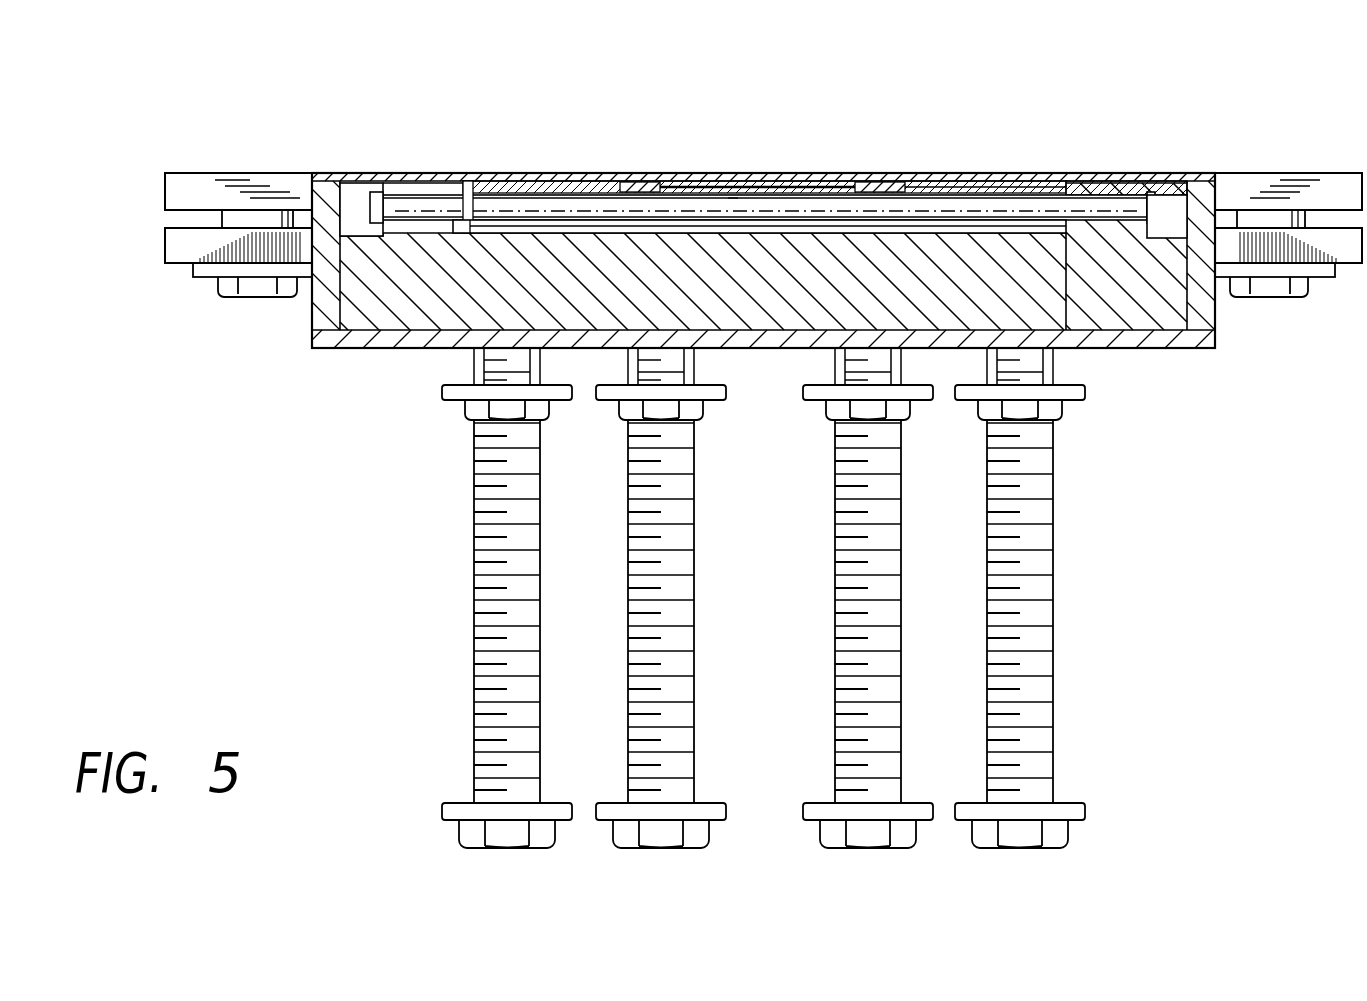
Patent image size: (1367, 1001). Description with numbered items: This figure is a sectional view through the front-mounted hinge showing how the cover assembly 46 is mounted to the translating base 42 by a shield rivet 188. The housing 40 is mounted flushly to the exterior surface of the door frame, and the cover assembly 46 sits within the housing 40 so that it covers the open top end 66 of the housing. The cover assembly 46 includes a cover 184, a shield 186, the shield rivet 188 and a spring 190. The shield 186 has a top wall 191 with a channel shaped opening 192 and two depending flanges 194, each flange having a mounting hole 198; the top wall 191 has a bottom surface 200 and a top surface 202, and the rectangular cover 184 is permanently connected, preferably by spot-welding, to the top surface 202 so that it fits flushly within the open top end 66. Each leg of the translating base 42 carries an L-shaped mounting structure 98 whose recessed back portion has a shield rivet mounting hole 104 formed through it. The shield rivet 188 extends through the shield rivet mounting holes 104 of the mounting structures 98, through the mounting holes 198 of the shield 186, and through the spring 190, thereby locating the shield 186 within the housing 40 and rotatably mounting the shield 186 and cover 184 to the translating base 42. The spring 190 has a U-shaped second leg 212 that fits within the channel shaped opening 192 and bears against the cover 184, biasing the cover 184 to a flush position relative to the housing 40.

The housing 40 is at (323, 183).
The translating base 42 is at (362, 304).
The cover assembly 46 is at (748, 170).
The open top end 66 is at (1105, 170).
The L-shaped mounting structure 98 is at (437, 185).
The shield rivet mounting hole 104 is at (405, 190).
The cover 184 is at (1040, 183).
The shield 186 is at (945, 185).
The shield rivet 188 is at (733, 203).
The spring 190 is at (625, 185).
The top wall 191 is at (540, 185).
The channel shaped opening 192 is at (688, 185).
The depending flanges 194 is at (470, 235).
The mounting hole 198 is at (470, 190).
The bottom surface 200 is at (993, 185).
The top surface 202 is at (573, 185).
The U-shaped second leg 212 is at (813, 183).